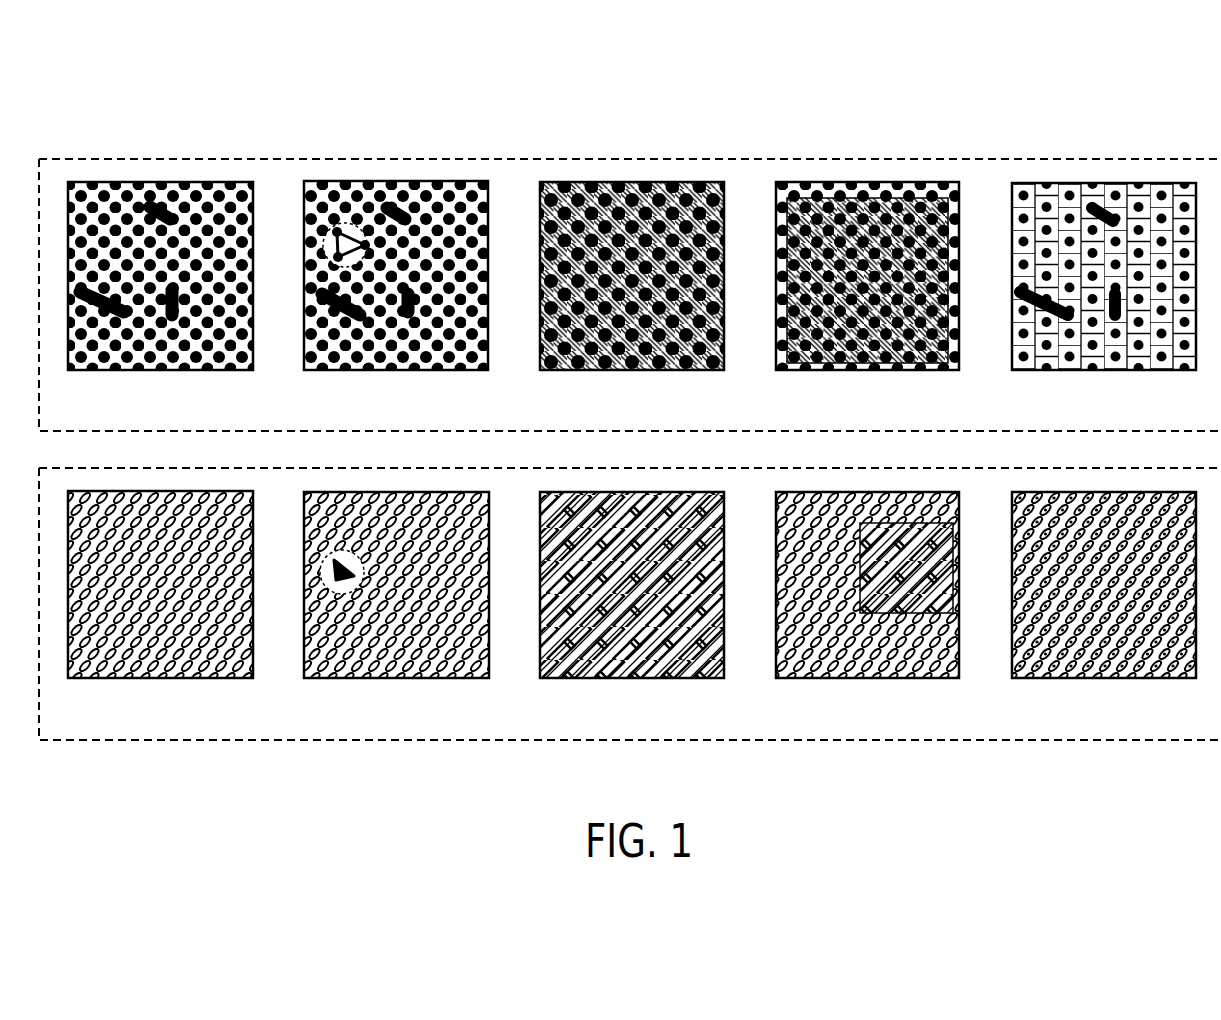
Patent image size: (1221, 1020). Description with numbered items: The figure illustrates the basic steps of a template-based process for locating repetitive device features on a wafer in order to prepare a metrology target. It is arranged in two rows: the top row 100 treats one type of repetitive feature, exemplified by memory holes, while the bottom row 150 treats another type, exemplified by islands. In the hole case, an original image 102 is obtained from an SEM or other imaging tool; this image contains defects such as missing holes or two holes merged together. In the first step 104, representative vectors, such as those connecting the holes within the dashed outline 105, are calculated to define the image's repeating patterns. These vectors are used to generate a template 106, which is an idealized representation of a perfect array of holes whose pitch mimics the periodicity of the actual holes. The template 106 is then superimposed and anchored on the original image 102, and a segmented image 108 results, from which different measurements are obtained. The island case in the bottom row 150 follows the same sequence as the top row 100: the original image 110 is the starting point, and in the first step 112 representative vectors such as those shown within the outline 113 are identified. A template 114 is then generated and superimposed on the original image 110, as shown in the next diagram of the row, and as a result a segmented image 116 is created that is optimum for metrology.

The top row of figures 100 is at (205, 100).
The original image 102 is at (134, 371).
The first step 104 is at (371, 371).
The dashed outline 105 is at (339, 223).
The template 106 is at (605, 371).
The segmented image 108 is at (1077, 371).
The original image 110 is at (134, 680).
The first step 112 is at (416, 680).
The outline of representative vectors 113 is at (331, 590).
The template 114 is at (605, 680).
The segmented image 116 is at (1071, 680).
The bottom row of figures 150 is at (205, 792).